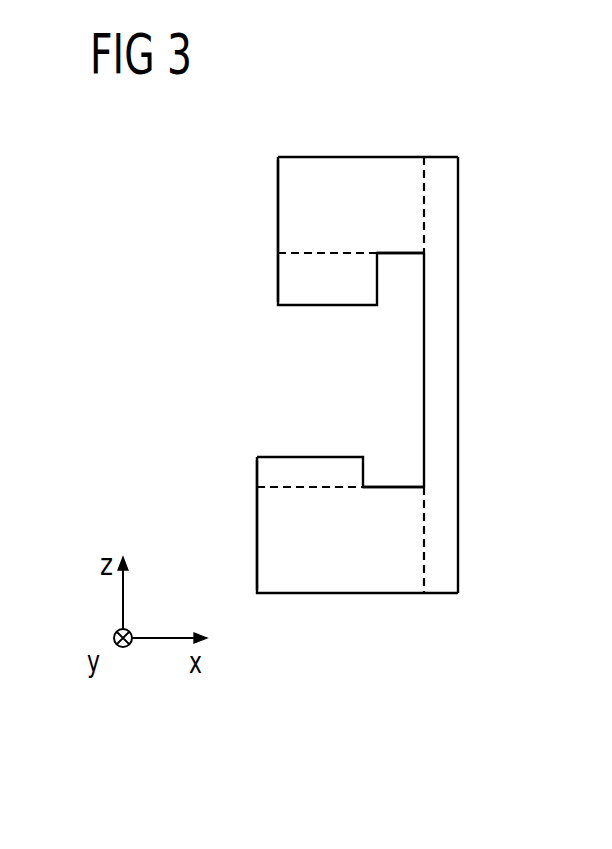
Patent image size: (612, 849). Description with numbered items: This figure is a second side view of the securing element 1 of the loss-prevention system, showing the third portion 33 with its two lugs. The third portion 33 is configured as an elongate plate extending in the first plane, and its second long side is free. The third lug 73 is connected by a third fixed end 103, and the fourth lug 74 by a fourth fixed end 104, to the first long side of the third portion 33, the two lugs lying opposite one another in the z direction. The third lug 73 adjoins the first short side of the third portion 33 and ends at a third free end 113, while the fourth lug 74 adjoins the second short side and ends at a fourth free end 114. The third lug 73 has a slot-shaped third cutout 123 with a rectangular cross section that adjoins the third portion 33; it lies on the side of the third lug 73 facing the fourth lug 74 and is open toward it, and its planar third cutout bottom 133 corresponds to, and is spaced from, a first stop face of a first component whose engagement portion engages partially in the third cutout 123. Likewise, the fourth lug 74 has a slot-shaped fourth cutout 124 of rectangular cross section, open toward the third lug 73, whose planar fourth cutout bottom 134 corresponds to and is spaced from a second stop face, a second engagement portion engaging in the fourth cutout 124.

The securing element 1 is at (417, 128).
The third portion 33 is at (447, 543).
The third lug 73 is at (313, 170).
The fourth lug 74 is at (340, 582).
The third free end 113 is at (279, 204).
The fourth free end 114 is at (258, 548).
The third fixed end 103 is at (423, 223).
The fourth fixed end 104 is at (423, 558).
The third cutout 123 is at (403, 275).
The fourth cutout 124 is at (392, 480).
The third cutout bottom 133 is at (415, 262).
The fourth cutout bottom 134 is at (416, 486).